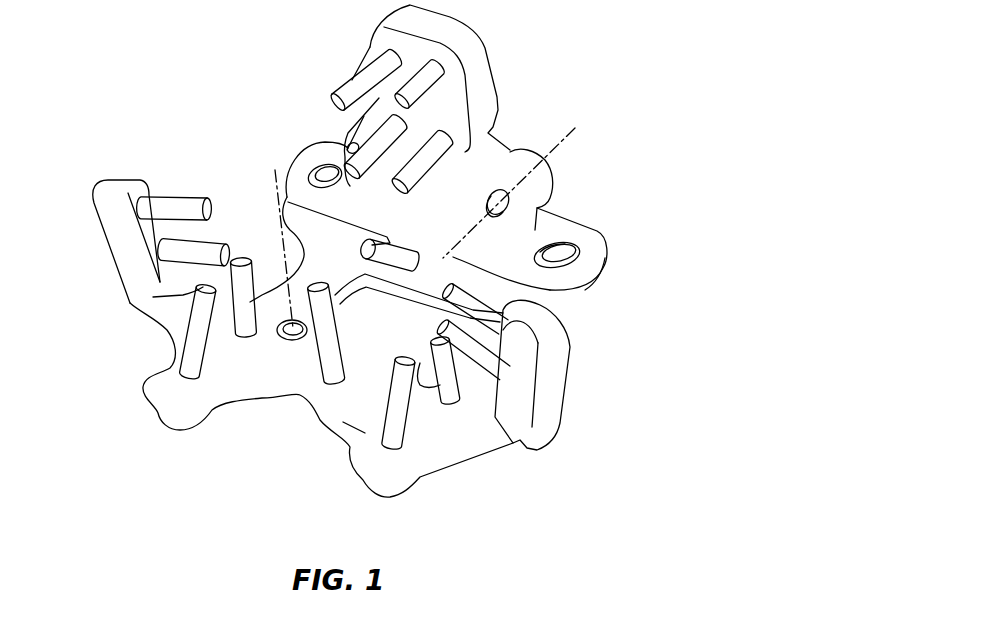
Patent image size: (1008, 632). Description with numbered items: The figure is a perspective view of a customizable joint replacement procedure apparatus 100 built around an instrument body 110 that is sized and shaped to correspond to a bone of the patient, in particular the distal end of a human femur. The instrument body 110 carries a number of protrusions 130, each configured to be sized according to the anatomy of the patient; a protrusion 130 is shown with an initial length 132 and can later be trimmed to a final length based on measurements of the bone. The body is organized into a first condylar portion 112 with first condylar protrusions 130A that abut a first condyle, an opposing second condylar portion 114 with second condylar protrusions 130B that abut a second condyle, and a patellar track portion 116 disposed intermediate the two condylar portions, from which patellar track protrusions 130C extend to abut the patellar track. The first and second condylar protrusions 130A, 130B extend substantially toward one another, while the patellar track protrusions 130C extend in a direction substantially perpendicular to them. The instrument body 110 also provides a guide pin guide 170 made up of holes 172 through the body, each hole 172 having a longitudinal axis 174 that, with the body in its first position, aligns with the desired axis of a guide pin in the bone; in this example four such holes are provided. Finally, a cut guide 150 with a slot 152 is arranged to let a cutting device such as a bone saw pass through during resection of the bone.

The joint replacement procedure apparatus 100 is at (587, 89).
The instrument body 110 is at (487, 153).
The first condylar portion 112 is at (108, 250).
The second condylar portion 114 is at (557, 362).
The patellar track portion 116 is at (480, 80).
The protrusion 130 is at (368, 72).
The first condylar protrusion 130A is at (187, 200).
The second condylar protrusion 130B is at (547, 310).
The patellar track protrusion 130C is at (343, 100).
The initial length 132 is at (367, 63).
The cut guide 150 is at (607, 270).
The slot 152 is at (597, 280).
The guide pin guide 170 is at (538, 205).
The hole 172 is at (285, 334).
The longitudinal axis 174 is at (573, 130).